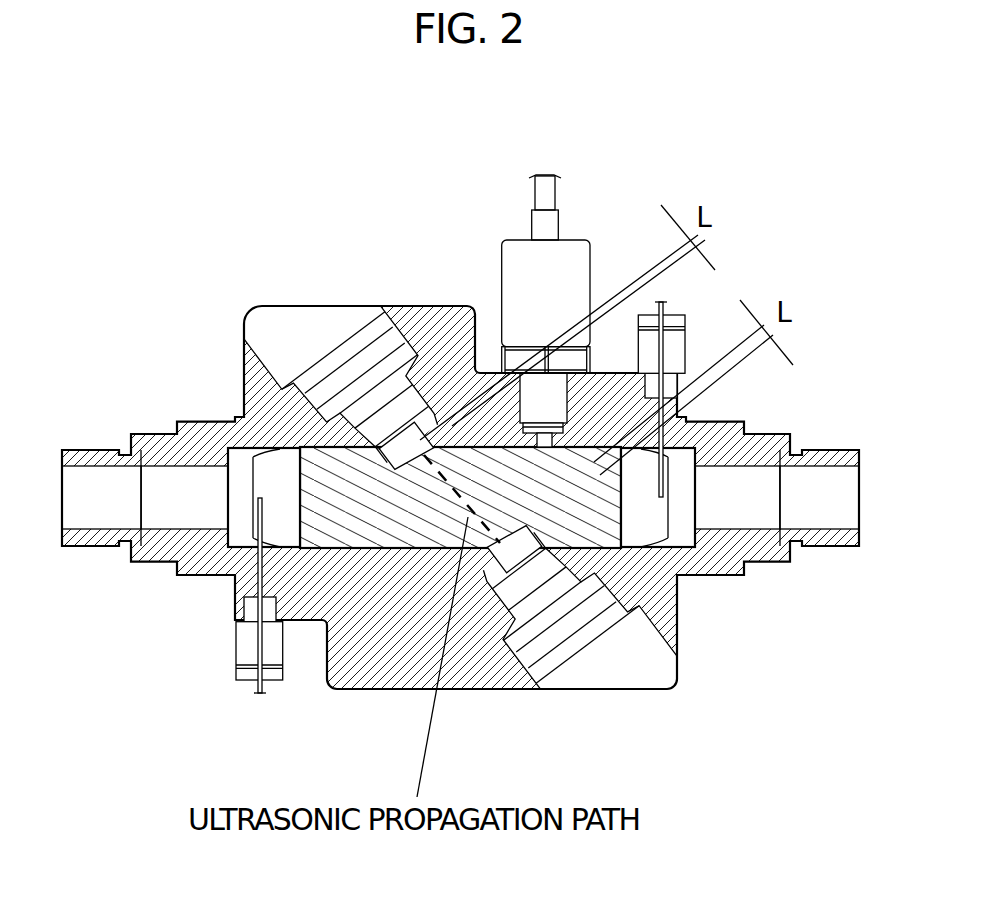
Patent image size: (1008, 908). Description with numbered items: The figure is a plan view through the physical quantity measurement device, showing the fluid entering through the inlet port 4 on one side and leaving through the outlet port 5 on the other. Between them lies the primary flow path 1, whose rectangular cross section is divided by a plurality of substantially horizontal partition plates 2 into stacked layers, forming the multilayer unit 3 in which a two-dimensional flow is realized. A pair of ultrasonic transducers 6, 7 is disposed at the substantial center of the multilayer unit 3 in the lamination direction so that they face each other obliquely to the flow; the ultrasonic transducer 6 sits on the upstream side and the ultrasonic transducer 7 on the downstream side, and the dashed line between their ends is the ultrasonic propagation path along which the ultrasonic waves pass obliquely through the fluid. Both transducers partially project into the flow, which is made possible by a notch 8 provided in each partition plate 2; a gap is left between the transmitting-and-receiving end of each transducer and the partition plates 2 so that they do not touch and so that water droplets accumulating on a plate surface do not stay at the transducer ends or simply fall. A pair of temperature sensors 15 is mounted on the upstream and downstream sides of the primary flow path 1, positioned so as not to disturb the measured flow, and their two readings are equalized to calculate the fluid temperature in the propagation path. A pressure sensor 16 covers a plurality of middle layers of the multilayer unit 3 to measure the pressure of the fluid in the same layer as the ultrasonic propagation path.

The primary flow path 1 is at (283, 483).
The partition plate 2 is at (397, 517).
The multilayer unit 3 is at (432, 517).
The inlet port 4 is at (97, 489).
The outlet port 5 is at (818, 488).
The ultrasonic transducer 6 is at (393, 423).
The ultrasonic transducer 7 is at (517, 587).
The notch 8 is at (430, 450).
The temperature sensor 15 is at (673, 357).
The pressure sensor 16 is at (542, 402).